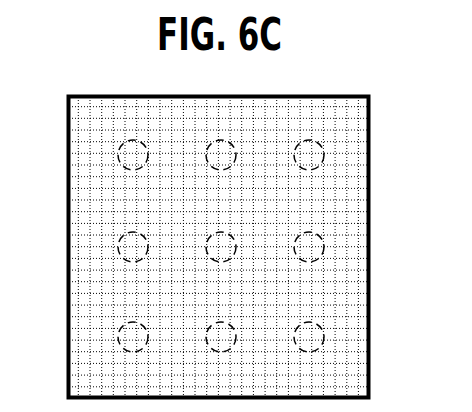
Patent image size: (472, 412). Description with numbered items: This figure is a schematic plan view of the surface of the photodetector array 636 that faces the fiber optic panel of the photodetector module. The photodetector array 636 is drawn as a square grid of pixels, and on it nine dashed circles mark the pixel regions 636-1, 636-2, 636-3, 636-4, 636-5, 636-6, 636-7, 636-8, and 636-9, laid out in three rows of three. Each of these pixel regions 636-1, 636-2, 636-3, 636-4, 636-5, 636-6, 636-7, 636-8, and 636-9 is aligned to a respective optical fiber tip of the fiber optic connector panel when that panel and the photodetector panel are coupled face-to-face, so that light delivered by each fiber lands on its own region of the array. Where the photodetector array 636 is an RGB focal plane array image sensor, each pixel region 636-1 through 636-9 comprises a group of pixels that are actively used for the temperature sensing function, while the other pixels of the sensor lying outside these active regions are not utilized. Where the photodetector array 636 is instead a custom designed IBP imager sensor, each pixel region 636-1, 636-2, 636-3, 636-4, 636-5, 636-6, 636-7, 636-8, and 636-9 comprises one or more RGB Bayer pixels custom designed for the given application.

The photodetector array 636 is at (113, 94).
The pixel region 636-1 is at (135, 133).
The pixel region 636-2 is at (223, 133).
The pixel region 636-3 is at (311, 133).
The pixel region 636-4 is at (135, 225).
The pixel region 636-5 is at (223, 225).
The pixel region 636-6 is at (311, 225).
The pixel region 636-7 is at (135, 315).
The pixel region 636-8 is at (223, 315).
The pixel region 636-9 is at (311, 315).